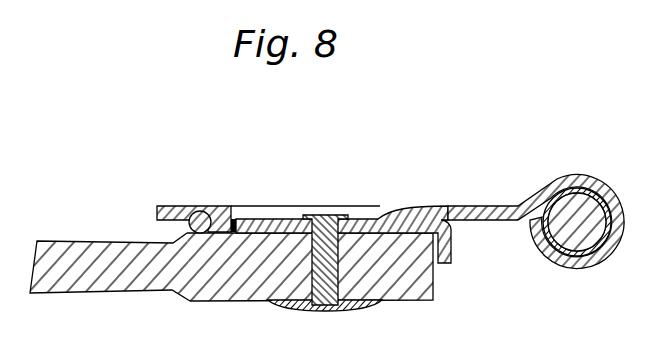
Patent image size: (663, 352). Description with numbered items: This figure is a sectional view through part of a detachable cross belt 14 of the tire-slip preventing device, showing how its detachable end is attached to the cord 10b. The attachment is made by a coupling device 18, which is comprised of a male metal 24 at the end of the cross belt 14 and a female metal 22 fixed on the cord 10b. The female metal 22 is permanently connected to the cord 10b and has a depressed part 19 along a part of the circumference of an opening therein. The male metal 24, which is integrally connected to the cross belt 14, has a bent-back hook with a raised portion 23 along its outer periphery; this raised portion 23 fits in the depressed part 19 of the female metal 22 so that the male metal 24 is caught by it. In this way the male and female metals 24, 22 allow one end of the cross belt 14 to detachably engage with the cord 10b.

The cord 10b is at (587, 210).
The cross belt 14 is at (97, 266).
The coupling device 18 is at (542, 121).
The depressed part 19 is at (220, 228).
The female metal 22 is at (497, 206).
The raised portion 23 is at (227, 205).
The male metal 24 is at (381, 218).